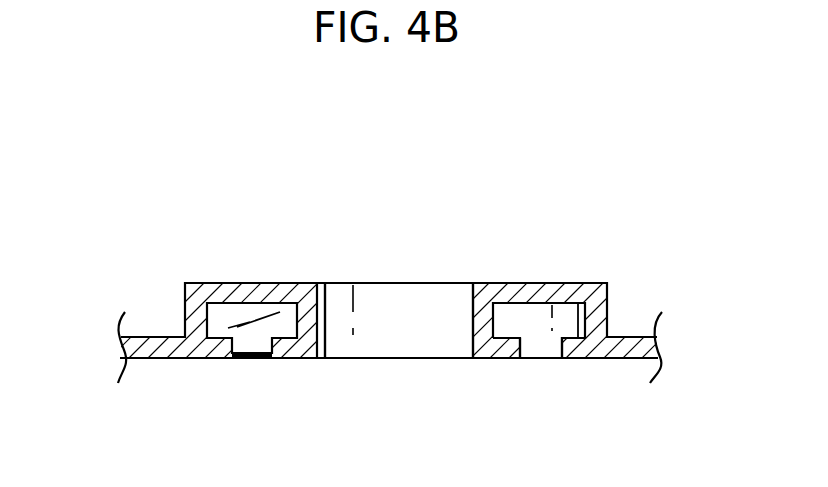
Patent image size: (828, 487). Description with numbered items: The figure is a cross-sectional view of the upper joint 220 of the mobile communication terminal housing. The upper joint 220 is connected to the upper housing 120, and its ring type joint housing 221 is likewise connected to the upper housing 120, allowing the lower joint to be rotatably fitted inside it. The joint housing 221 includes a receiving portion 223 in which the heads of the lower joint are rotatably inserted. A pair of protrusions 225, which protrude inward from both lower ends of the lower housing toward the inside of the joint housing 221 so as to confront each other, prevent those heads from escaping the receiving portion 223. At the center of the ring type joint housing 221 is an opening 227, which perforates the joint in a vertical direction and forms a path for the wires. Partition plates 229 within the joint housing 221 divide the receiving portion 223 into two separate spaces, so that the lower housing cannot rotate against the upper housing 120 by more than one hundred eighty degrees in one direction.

The upper joint 220 is at (162, 166).
The joint housing 221 is at (208, 286).
The partition plate 229 is at (253, 312).
The opening 227 is at (412, 300).
The receiving portion 223 is at (533, 317).
The protrusion 225 is at (573, 357).
The upper housing 120 is at (158, 357).